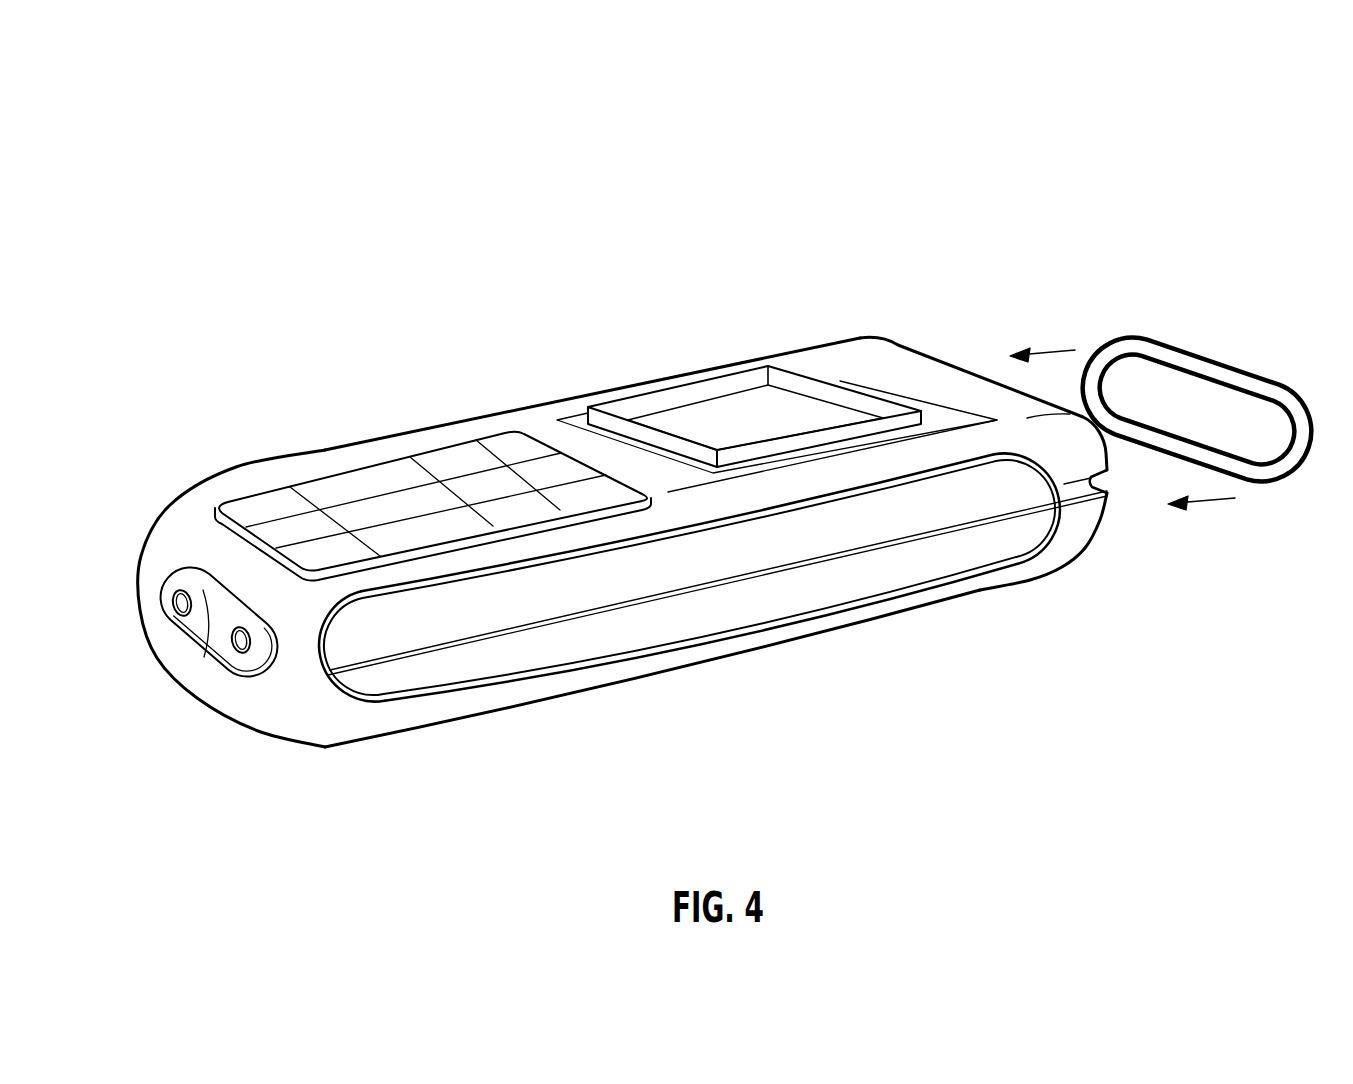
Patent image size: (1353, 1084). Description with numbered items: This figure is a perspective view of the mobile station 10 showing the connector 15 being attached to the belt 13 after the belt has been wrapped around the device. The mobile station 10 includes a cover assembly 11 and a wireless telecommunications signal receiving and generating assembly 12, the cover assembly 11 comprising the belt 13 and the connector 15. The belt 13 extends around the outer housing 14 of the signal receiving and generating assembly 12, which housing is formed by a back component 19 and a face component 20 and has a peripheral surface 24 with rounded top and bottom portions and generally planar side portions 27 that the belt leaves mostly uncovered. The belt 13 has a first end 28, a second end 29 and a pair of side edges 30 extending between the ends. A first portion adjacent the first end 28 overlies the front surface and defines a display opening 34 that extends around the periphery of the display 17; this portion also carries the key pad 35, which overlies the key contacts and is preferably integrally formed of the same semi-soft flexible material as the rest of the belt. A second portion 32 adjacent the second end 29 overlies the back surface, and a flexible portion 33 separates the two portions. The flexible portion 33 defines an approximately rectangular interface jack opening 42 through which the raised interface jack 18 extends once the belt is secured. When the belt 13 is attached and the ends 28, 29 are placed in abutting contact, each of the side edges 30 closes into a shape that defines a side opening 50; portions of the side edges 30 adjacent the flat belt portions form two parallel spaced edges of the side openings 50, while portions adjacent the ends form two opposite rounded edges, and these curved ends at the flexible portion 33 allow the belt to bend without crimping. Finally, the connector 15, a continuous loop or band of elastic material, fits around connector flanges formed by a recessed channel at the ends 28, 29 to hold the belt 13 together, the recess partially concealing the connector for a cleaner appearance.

The mobile station 10 is at (825, 164).
The cover assembly 11 is at (951, 290).
The wireless telecommunications signal receiving and generating assembly 12 is at (777, 597).
The belt 13 is at (463, 698).
The outer housing 14 is at (889, 534).
The connector 15 is at (1226, 354).
The display 17 is at (761, 426).
The interface jack 18 is at (218, 653).
The back component 19 is at (568, 658).
The face component 20 is at (463, 608).
The peripheral surface 24 is at (989, 547).
The side portions 27 is at (707, 571).
The first end 28 is at (1078, 455).
The second end 29 is at (1087, 513).
The side edges 30 is at (520, 563).
The second portion 32 is at (680, 653).
The flexible portion 33 is at (294, 697).
The display opening 34 is at (817, 372).
The key pad 35 is at (240, 512).
The interface jack opening 42 is at (188, 647).
The side openings 50 is at (860, 570).